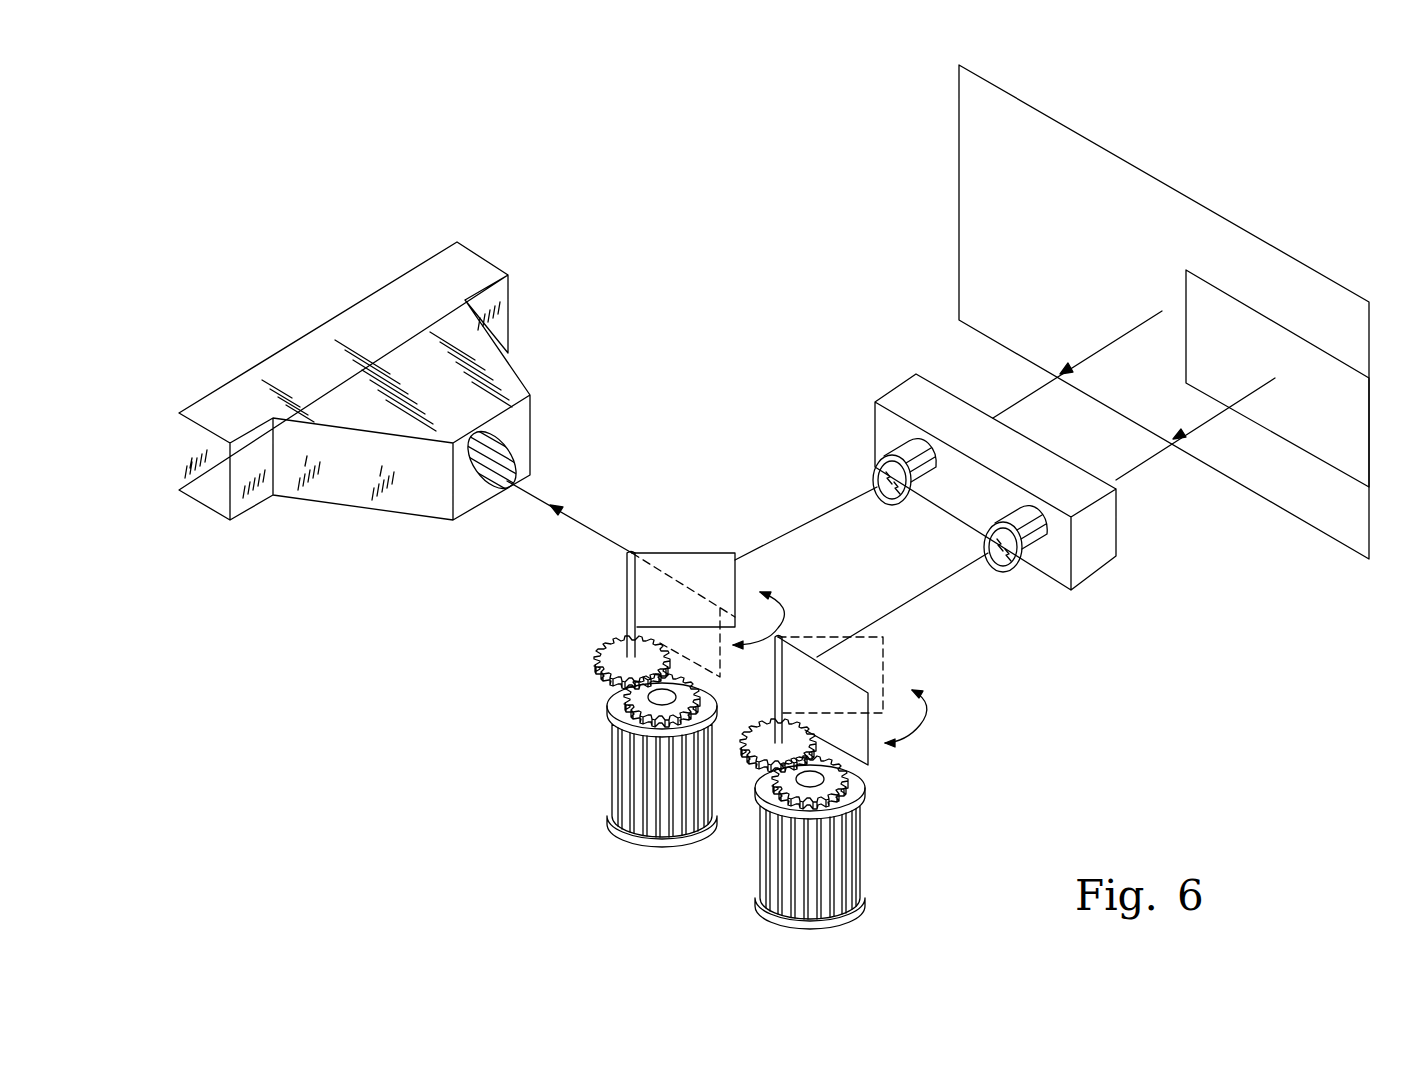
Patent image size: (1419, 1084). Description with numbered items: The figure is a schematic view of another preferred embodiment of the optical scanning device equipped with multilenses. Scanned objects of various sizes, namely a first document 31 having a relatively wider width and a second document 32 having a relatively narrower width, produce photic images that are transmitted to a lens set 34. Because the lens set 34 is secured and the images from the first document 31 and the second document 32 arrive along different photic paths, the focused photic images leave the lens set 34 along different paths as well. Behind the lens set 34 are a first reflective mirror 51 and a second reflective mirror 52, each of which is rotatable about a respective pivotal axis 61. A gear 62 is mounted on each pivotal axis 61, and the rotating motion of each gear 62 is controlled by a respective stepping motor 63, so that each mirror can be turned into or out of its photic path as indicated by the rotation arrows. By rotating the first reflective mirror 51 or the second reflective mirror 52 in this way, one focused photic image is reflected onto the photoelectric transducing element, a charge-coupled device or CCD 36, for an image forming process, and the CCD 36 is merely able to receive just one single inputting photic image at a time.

The first document 31 is at (1112, 152).
The second document 32 is at (1253, 310).
The lens set 34 is at (914, 374).
The photoelectric transducing element 36 is at (487, 261).
The first reflective mirror 51 is at (692, 553).
The second reflective mirror 52 is at (838, 637).
The pivotal axis 61 is at (627, 585).
The gear 62 is at (598, 668).
The stepping motor 63 is at (613, 783).